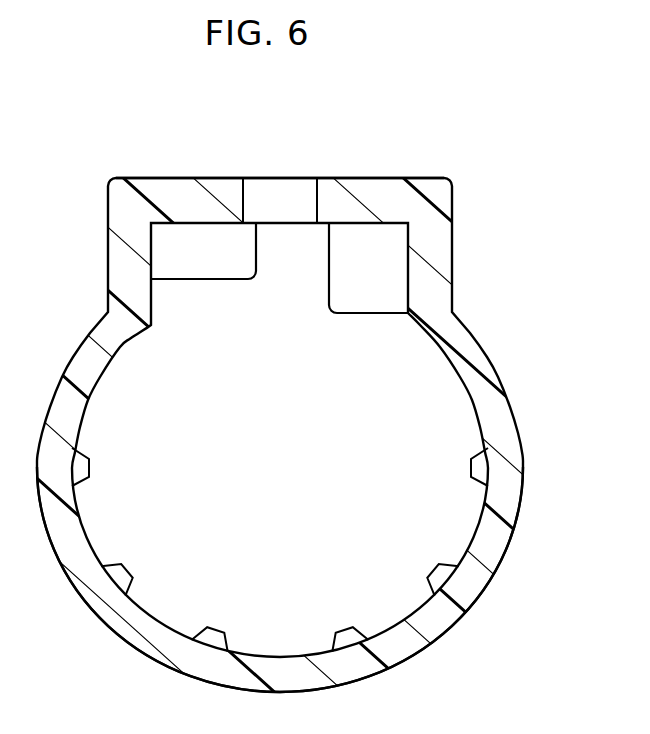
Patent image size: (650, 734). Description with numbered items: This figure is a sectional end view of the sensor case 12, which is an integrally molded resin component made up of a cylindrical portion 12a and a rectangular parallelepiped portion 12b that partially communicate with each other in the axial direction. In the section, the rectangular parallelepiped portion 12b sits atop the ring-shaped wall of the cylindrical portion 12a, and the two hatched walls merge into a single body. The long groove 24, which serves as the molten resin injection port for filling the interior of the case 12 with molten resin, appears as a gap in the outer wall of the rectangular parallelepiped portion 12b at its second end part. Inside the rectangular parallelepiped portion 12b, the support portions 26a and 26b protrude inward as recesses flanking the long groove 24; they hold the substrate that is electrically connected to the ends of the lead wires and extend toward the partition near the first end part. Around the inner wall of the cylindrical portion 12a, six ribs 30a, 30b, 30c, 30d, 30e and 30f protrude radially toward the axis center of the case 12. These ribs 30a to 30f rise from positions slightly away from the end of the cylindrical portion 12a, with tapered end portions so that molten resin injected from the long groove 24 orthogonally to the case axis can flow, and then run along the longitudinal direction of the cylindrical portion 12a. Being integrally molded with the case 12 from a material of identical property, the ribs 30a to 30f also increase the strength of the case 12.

The case 12 is at (482, 338).
The cylindrical portion 12a is at (497, 409).
The rectangular parallelepiped portion 12b is at (436, 232).
The long groove 24 is at (317, 202).
The support portion 26a is at (372, 277).
The support portion 26b is at (172, 255).
The rib 30a is at (480, 465).
The rib 30b is at (442, 573).
The rib 30c is at (348, 640).
The rib 30d is at (212, 640).
The rib 30e is at (118, 573).
The rib 30f is at (78, 465).